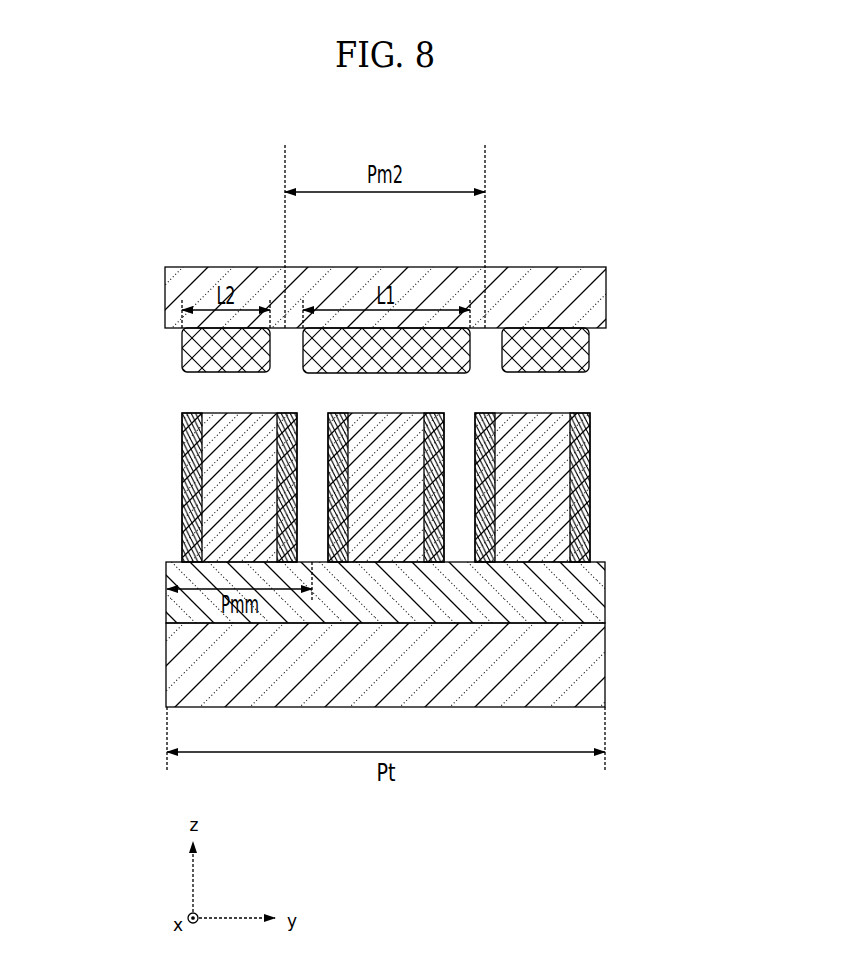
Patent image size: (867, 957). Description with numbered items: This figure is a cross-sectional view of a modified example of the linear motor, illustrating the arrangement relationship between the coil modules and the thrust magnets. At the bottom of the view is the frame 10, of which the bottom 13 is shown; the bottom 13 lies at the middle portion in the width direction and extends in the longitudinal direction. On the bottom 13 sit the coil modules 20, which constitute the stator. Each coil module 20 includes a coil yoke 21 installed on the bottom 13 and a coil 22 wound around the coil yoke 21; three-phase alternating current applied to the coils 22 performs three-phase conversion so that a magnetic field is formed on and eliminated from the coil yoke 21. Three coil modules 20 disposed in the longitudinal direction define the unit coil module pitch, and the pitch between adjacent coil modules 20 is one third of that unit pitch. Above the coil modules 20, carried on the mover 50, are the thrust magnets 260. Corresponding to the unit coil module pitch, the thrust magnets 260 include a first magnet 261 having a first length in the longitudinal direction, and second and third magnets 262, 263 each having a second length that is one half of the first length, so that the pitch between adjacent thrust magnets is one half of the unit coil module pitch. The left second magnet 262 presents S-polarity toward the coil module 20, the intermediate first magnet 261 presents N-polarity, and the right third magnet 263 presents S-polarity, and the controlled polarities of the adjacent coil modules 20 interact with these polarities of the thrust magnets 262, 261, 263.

The mover 50 is at (572, 260).
The thrust magnets 260 is at (396, 290).
The first magnet 261 is at (303, 362).
The second magnet 262 is at (181, 349).
The third magnet 263 is at (590, 347).
The coil module 20 is at (329, 518).
The coil yoke 21 is at (177, 572).
The coil 22 is at (181, 523).
The bottom 13 is at (339, 665).
The frame 10 is at (187, 670).